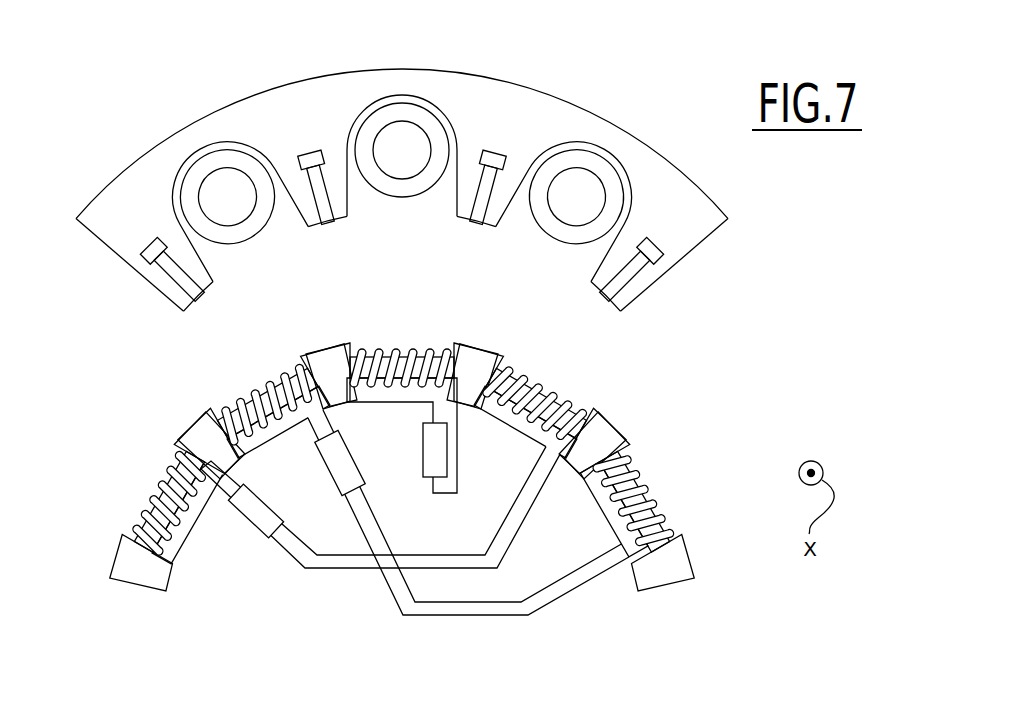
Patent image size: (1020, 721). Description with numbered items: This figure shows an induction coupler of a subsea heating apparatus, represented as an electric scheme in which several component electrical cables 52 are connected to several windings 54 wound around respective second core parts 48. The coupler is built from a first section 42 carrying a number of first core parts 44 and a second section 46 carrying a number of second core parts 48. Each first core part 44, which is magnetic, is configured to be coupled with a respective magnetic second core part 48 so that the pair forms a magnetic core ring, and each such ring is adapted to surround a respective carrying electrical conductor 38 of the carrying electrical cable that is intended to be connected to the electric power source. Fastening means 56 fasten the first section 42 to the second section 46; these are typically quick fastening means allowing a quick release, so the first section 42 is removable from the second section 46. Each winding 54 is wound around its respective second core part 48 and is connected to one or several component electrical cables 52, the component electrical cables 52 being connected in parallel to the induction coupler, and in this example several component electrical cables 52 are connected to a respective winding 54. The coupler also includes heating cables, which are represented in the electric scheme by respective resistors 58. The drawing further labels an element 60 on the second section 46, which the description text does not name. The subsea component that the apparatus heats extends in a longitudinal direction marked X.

The carrying electrical conductor 38 is at (237, 192).
The first section 42 is at (398, 161).
The first core part 44 is at (190, 135).
The second section 46 is at (401, 490).
The second core part 48 is at (247, 405).
The component electrical cable 52 is at (472, 570).
The winding 54 is at (300, 383).
The fastening means 56 is at (330, 192).
The resistor 58 is at (420, 472).
The busbar 60 is at (190, 545).